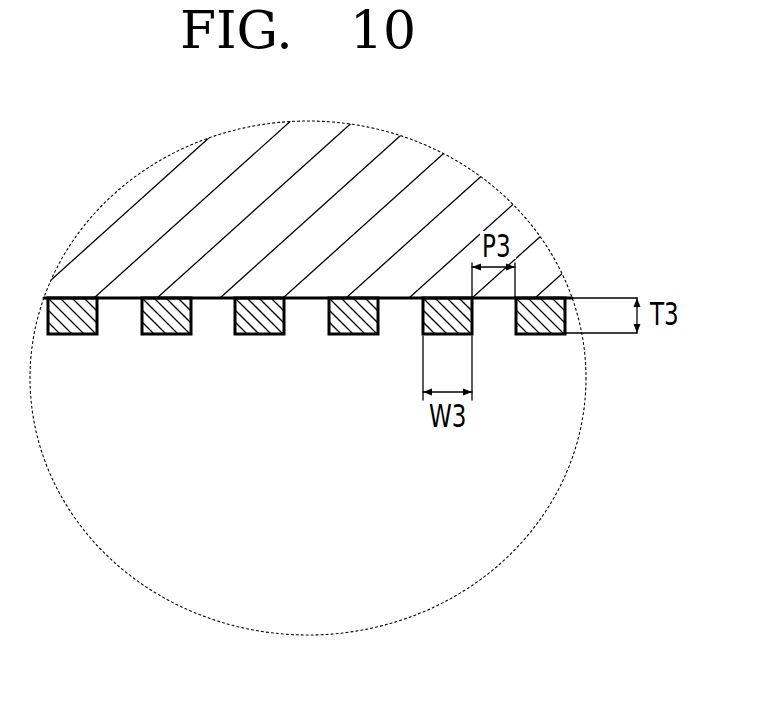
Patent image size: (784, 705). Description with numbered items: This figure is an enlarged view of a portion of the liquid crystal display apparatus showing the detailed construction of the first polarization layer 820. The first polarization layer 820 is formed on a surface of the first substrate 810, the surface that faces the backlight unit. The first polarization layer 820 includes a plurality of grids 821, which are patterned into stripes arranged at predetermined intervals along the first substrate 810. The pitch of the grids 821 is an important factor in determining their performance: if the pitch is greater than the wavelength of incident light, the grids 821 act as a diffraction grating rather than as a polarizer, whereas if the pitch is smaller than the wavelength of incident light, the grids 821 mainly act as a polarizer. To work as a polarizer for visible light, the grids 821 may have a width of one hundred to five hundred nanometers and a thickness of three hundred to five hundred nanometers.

The first substrate 810 is at (445, 178).
The first polarization layer 820 is at (306, 377).
The grids 821 is at (153, 405).